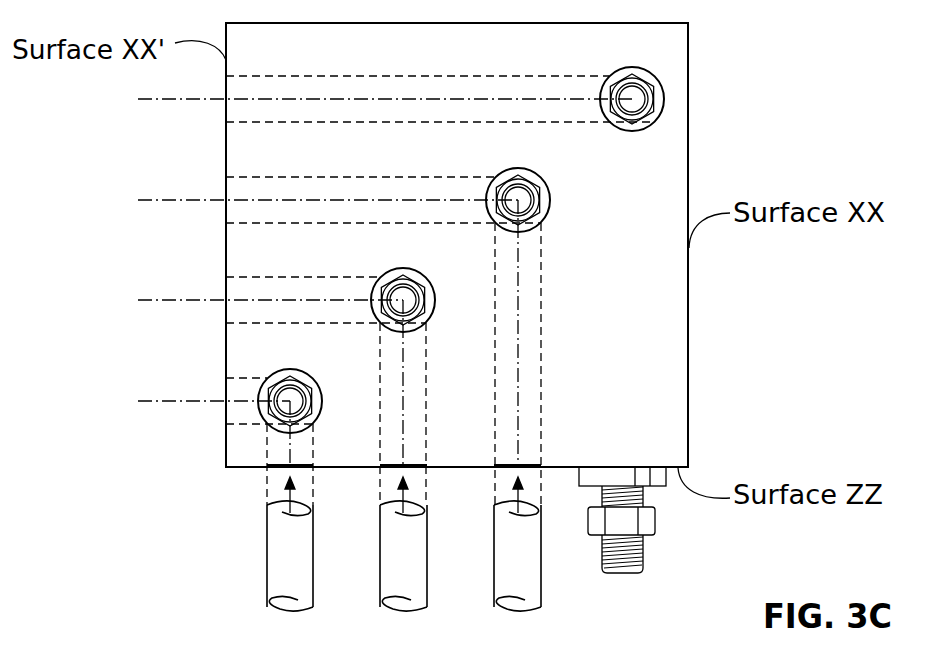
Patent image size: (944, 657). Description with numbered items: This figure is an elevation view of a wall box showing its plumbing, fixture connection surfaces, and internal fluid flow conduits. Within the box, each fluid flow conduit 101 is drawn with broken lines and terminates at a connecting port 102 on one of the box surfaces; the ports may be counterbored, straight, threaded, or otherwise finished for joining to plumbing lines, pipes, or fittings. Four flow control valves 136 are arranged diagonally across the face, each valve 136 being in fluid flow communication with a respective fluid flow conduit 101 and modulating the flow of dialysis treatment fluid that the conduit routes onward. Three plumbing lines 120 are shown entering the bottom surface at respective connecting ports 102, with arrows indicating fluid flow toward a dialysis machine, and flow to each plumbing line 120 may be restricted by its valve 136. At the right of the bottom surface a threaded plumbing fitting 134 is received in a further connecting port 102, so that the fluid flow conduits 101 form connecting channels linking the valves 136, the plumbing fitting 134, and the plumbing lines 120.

The fluid flow conduit 101 is at (424, 85).
The connecting port 102 is at (282, 462).
The plumbing line 120 is at (278, 579).
The plumbing fitting 134 is at (656, 521).
The flow control valve 136 is at (636, 94).